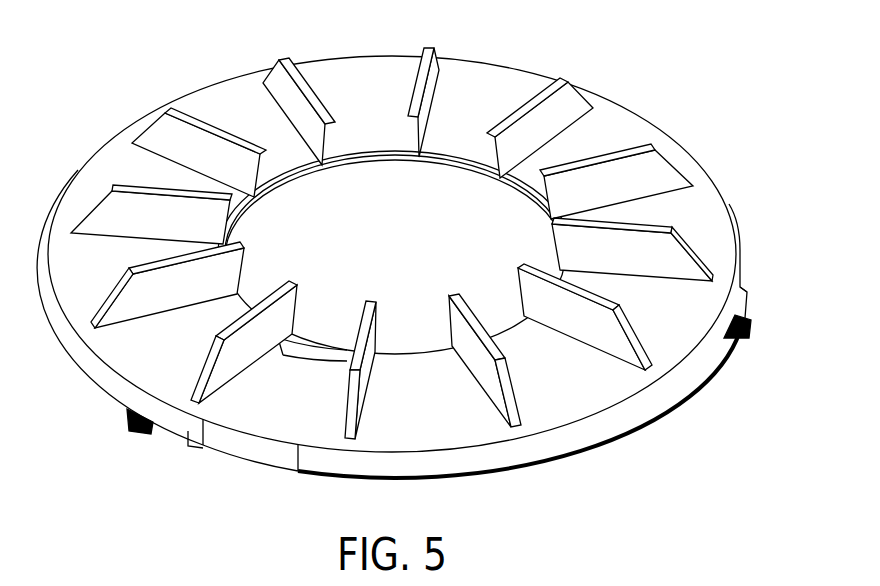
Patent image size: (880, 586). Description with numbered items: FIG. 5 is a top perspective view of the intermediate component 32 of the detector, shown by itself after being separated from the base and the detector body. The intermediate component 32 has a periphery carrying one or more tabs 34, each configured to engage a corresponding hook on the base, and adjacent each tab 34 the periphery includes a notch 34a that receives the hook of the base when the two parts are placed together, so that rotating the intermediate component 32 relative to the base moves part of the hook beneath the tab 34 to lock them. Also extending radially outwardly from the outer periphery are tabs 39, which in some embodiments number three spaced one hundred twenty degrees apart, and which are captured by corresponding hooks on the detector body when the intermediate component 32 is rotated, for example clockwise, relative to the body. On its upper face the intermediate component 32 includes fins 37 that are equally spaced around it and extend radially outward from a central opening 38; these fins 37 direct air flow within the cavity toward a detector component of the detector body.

The intermediate component 32 is at (443, 274).
The tab 34 is at (188, 436).
The notch 34a is at (263, 455).
The fin 37 is at (575, 101).
The opening 38 is at (442, 157).
The tab 39 is at (133, 421).